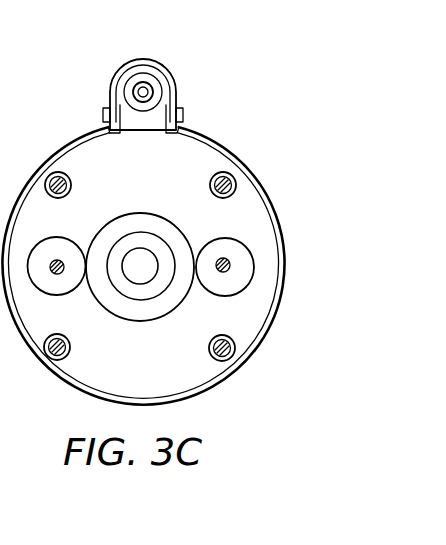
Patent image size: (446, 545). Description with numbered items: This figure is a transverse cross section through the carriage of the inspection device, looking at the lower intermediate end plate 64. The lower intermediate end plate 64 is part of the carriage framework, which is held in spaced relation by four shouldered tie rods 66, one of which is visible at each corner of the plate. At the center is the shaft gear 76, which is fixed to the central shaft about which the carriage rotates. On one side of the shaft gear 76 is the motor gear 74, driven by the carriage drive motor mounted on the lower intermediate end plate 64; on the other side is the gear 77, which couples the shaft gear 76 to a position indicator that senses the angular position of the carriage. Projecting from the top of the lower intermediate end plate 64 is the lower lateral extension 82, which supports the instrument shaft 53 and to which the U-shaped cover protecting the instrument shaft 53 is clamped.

The instrument shaft 53 is at (146, 90).
The lower lateral extension 82 is at (141, 128).
The shouldered tie rod 66 is at (234, 180).
The lower intermediate end plate 64 is at (249, 230).
The shaft gear 76 is at (148, 212).
The motor gear 74 is at (64, 237).
The gear 77 is at (219, 238).